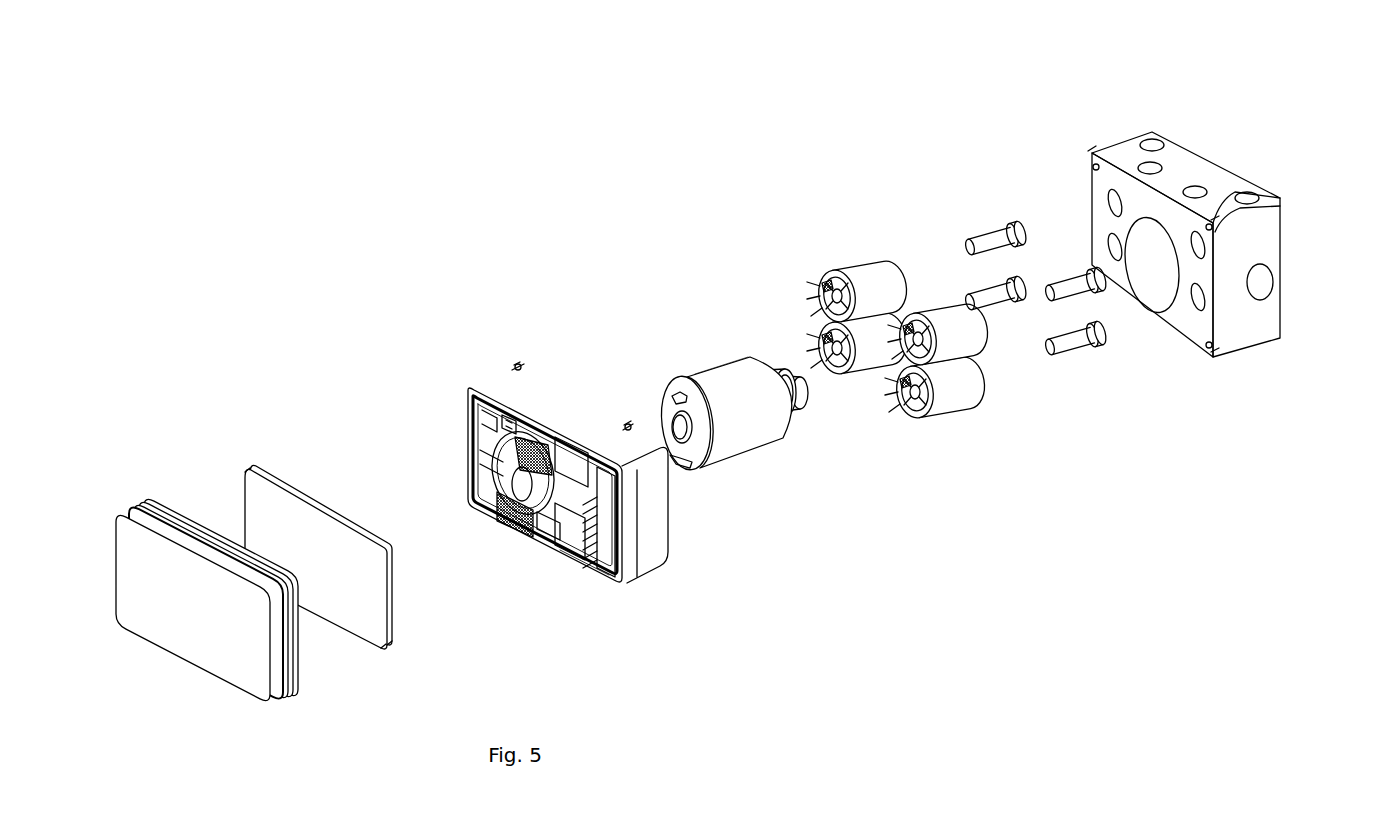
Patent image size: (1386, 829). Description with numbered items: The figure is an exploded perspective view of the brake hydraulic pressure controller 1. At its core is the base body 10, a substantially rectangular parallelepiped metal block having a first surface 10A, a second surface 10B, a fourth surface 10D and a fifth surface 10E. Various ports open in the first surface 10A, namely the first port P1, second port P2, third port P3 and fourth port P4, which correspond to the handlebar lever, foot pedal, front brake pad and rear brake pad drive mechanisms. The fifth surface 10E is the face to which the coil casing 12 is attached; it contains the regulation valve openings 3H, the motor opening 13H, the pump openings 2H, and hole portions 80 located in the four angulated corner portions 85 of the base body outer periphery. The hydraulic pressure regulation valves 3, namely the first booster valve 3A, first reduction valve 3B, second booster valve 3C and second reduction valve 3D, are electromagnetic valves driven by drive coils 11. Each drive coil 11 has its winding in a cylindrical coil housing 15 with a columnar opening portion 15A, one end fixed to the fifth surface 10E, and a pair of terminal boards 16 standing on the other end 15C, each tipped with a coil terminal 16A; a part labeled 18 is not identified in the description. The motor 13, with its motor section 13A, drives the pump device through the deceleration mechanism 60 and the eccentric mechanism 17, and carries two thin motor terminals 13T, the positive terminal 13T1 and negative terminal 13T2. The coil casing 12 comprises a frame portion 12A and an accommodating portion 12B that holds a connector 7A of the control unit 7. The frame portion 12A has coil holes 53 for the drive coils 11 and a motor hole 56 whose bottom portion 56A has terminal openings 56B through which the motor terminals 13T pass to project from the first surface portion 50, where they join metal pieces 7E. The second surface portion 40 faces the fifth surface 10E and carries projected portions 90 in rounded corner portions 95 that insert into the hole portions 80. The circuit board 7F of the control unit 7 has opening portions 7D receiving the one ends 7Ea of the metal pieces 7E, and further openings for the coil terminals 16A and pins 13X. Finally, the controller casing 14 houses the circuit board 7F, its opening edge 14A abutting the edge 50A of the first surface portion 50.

The brake hydraulic pressure controller 1 is at (765, 124).
The control unit 7 is at (334, 568).
The circuit board 7F is at (334, 568).
The opening portions 7D is at (318, 540).
The controller casing 14 is at (227, 622).
The opening edge 14A is at (302, 660).
The coil casing 12 is at (881, 369).
The frame portion 12A is at (490, 382).
The accommodating portion 12B is at (663, 562).
The connector 7A is at (608, 584).
The metal piece 7E is at (516, 459).
The one end of metal piece 7Ea is at (516, 459).
The coil holes 53 is at (482, 420).
The pins 13X is at (490, 412).
The first surface portion 50 is at (488, 430).
The second surface portion 40 is at (538, 430).
The edge 50A is at (535, 450).
The motor hole 56 is at (510, 524).
The bottom portion 56A is at (503, 482).
The terminal openings 56B is at (524, 442).
The projected portions 90 is at (518, 363).
The rounded corner portions 95 is at (512, 366).
The motor 13 is at (721, 427).
The motor terminals 13T is at (681, 430).
The positive terminal 13T1 is at (679, 398).
The negative terminal 13T2 is at (681, 461).
The motor section 13A is at (721, 365).
The eccentric mechanism 17 is at (780, 393).
The deceleration mechanism 60 is at (796, 393).
The coil housing 15 is at (888, 342).
The other end of coil housing 15C is at (840, 272).
The columnar opening portion 15A is at (910, 412).
The terminal boards 16 is at (856, 363).
The coil terminal 16A is at (856, 363).
The lead 18 is at (828, 284).
The drive coils 11 is at (858, 266).
The hydraulic pressure regulation valves 3 is at (1012, 288).
The first booster valve 3A is at (992, 240).
The first reduction valve 3B is at (976, 292).
The second booster valve 3C is at (1080, 283).
The second reduction valve 3D is at (1082, 342).
The base body 10 is at (1197, 248).
The first surface 10A is at (1105, 150).
The second surface 10B is at (1256, 294).
The fourth surface 10D is at (1245, 346).
The fifth surface 10E is at (1170, 335).
The first port P1 is at (1156, 144).
The second port P2 is at (1257, 197).
The third port P3 is at (1160, 165).
The fourth port P4 is at (1200, 190).
The motor opening 13H is at (1172, 281).
The regulation valve opening 3H is at (1110, 246).
The pump openings 2H is at (1272, 282).
The hole portion 80 is at (1092, 167).
The angulated corner portions 85 is at (1090, 155).